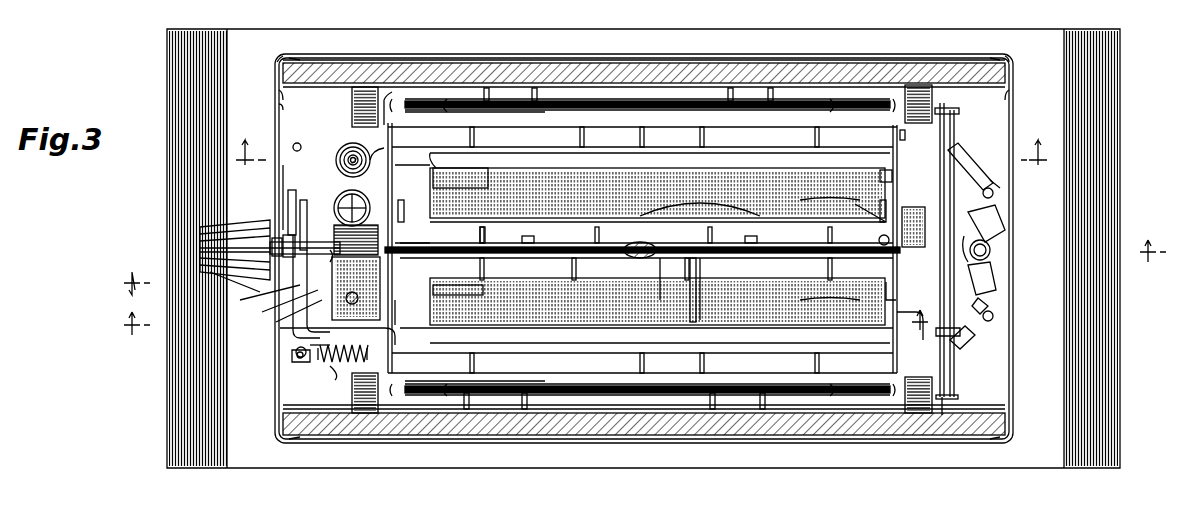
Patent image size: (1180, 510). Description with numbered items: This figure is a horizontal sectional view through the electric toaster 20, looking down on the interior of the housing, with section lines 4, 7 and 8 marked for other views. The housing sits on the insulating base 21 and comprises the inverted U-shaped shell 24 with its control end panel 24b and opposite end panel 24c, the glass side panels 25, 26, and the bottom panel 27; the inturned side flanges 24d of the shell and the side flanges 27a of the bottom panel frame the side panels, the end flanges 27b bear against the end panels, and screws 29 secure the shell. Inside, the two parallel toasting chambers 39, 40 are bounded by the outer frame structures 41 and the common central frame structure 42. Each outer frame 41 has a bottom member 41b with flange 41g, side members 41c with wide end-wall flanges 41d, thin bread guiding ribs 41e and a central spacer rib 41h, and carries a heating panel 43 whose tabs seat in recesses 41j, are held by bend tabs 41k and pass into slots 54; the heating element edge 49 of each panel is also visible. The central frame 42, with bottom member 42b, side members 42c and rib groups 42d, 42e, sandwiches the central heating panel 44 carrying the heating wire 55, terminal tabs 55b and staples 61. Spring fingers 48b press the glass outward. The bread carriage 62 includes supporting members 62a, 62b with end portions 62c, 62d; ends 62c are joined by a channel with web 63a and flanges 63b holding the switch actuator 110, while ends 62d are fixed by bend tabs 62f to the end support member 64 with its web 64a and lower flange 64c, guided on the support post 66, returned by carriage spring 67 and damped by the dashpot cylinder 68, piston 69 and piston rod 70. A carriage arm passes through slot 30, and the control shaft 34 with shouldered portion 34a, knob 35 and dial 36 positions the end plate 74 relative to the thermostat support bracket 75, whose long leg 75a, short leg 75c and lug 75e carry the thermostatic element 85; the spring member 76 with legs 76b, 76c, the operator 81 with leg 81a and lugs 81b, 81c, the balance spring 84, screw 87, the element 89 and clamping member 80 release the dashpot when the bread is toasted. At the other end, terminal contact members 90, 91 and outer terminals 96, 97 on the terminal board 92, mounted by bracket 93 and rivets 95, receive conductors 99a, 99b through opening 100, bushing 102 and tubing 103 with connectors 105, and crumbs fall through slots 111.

The electric toaster 20 is at (646, 487).
The base 21 is at (1122, 68).
The outer shell 24 is at (1014, 56).
The control end panel 24b is at (275, 70).
The opposite end panel 24c is at (1012, 72).
The inturned side flanges 24d is at (292, 56).
The side panel 25 is at (580, 436).
The side panel 26 is at (585, 64).
The bottom panel 27 is at (278, 104).
The side flanges 27a is at (328, 60).
The end flanges 27b is at (278, 96).
The screws 29 is at (297, 143).
The vertically extending slot 30 is at (270, 245).
The control shaft 34 is at (286, 233).
The enlarged shouldered portion 34a is at (278, 236).
The control knob 35 is at (200, 242).
The escutcheon plate 36 is at (290, 270).
The toasting chamber 39 is at (657, 301).
The toasting chamber 40 is at (657, 190).
The outer frame structure 41 is at (394, 141).
The bottom member 41b is at (686, 370).
The side members 41c is at (395, 99).
The inwardly extending flanges 41d is at (890, 314).
The bread guiding ribs 41e is at (470, 140).
The outwardly extending flange 41g is at (606, 122).
The spacer rib 41h is at (640, 378).
The recesses 41j is at (447, 99).
The bend tabs 41k is at (535, 88).
The central frame structure 42 is at (688, 290).
The bottom member 42b is at (646, 308).
The side members 42c is at (402, 210).
The bread guiding ribs 42d is at (646, 278).
The bread guiding ribs 42e is at (490, 236).
The heating panel 43 is at (632, 100).
The central heating panel 44 is at (610, 246).
The spring finger 48b is at (366, 87).
The guide strip 49 is at (495, 114).
The elongated slots 54 is at (487, 88).
The heating wire 55 is at (462, 238).
The terminal tabs 55b is at (868, 240).
The staples 61 is at (642, 242).
The bread carriage 62 is at (604, 178).
The bread supporting member 62a is at (470, 328).
The bread supporting member 62b is at (706, 186).
The end portions 62c is at (870, 214).
The end portions 62d is at (450, 330).
The bend tabs 62f is at (370, 271).
The web 63a is at (892, 297).
The horizontal flanges 63b is at (896, 192).
The end support member 64 is at (366, 200).
The central web 64a is at (410, 312).
The lower flange 64c is at (330, 290).
The vertical support post 66 is at (359, 300).
The carriage spring 67 is at (345, 158).
The cylinder 68 is at (350, 143).
The piston 69 is at (348, 150).
The piston rod 70 is at (1100, 492).
The end plate 74 is at (310, 278).
The thermostat support bracket 75 is at (612, 330).
The long leg 75a is at (695, 340).
The short leg 75c is at (320, 280).
The upstanding lug 75e is at (904, 330).
The resilient spring member 76 is at (308, 344).
The leg 76b is at (340, 372).
The arm end 76c is at (322, 296).
The clamping member 80 is at (282, 165).
The operator 81 is at (312, 298).
The elongated leg 81a is at (305, 202).
The lug 81b is at (292, 190).
The small lug 81c is at (306, 330).
The balance spring 84 is at (322, 368).
The thermostatic element 85 is at (660, 282).
The screw 87 is at (296, 360).
The lever 89 is at (878, 220).
The terminal contact member 90 is at (940, 336).
The terminal contact member 91 is at (934, 156).
The terminal board 92 is at (942, 416).
The U-shaped bracket 93 is at (950, 110).
The rivets 95 is at (955, 140).
The outer terminal member 96 is at (966, 337).
The outer terminal member 97 is at (976, 176).
The conductor 99a is at (998, 286).
The conductor 99b is at (1000, 214).
The opening 100 is at (1004, 230).
The metal bushing 102 is at (988, 254).
The insulating tubing 103 is at (992, 246).
The female end connector 105 is at (1000, 180).
The switch actuator 110 is at (910, 206).
The elongated slots 111 is at (452, 160).
The section line 4 is at (637, 271).
The section line 7 is at (641, 141).
The section line 8 is at (518, 318).